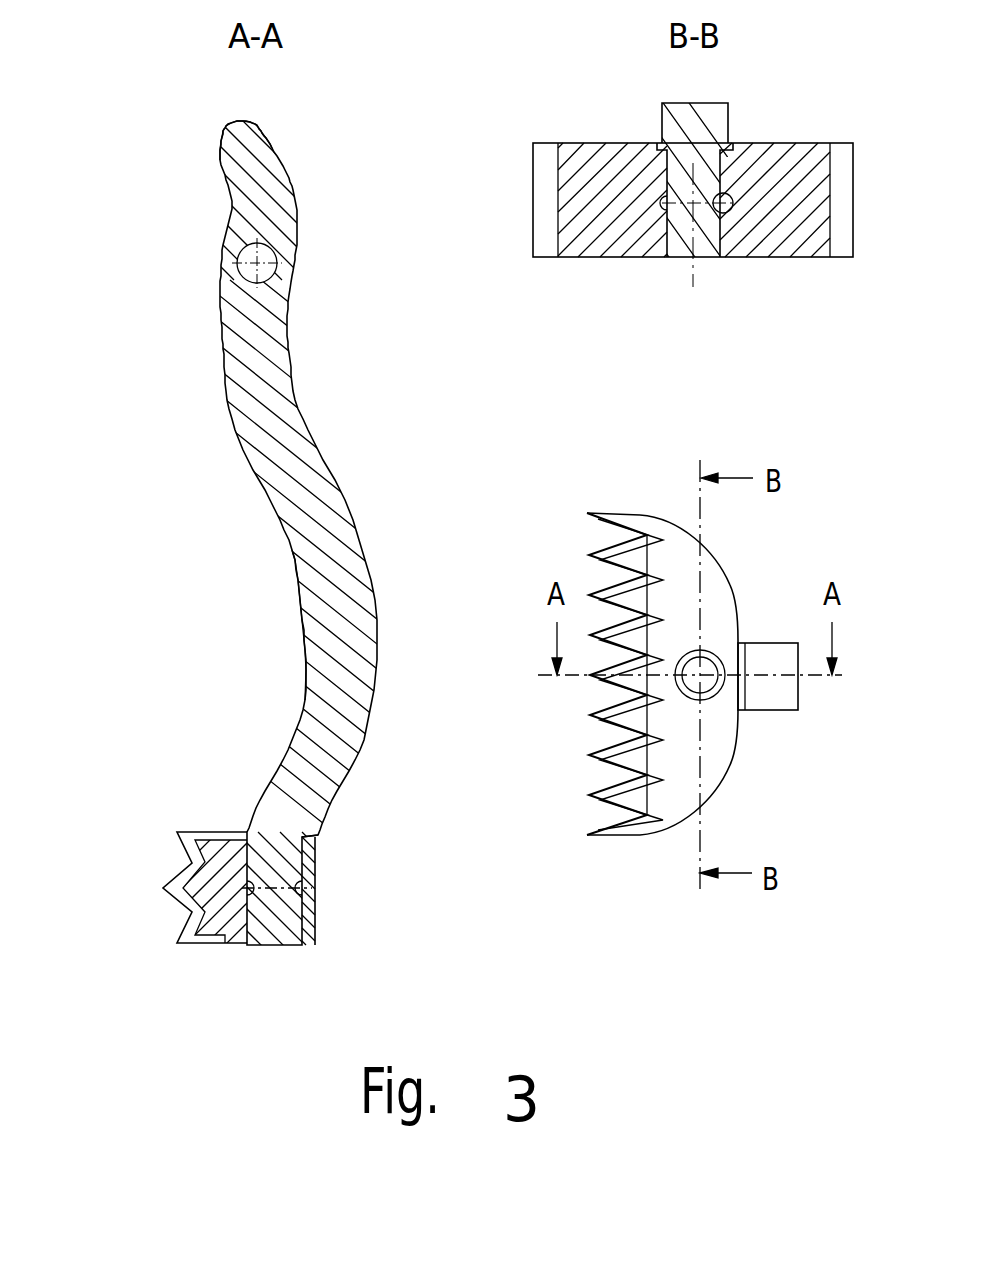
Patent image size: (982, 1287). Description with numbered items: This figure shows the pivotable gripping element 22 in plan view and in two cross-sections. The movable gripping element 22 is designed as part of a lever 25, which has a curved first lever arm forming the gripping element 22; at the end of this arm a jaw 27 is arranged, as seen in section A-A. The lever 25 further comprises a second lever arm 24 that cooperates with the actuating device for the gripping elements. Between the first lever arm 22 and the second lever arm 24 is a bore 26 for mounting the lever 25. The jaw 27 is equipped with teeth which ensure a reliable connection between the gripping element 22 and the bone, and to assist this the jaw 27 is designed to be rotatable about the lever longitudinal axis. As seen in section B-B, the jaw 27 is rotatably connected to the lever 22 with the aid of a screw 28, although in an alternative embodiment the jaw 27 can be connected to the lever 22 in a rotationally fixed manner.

The gripping element 22 is at (305, 472).
The second lever arm 24 is at (257, 180).
The lever 25 is at (293, 602).
The bore 26 is at (265, 272).
The jaw 27 is at (218, 923).
The screw 28 is at (728, 208).